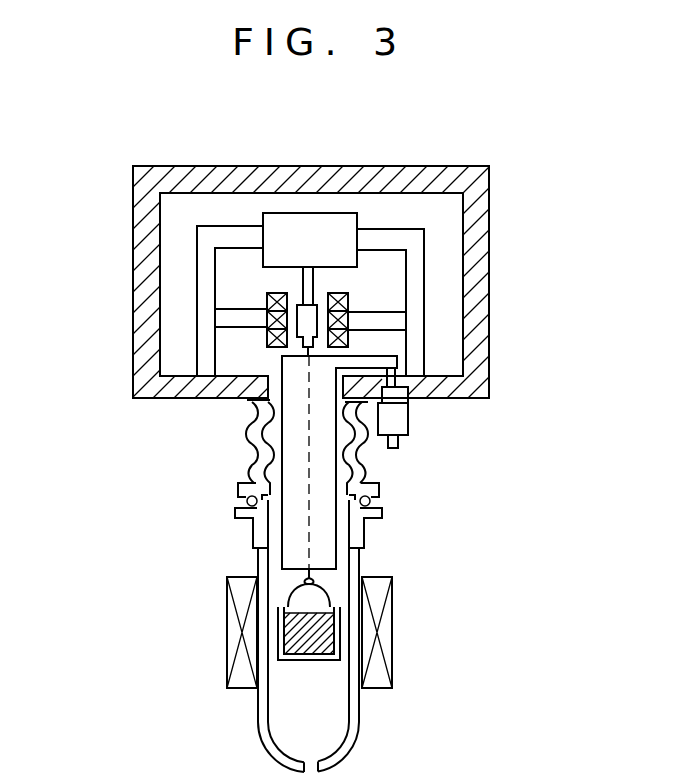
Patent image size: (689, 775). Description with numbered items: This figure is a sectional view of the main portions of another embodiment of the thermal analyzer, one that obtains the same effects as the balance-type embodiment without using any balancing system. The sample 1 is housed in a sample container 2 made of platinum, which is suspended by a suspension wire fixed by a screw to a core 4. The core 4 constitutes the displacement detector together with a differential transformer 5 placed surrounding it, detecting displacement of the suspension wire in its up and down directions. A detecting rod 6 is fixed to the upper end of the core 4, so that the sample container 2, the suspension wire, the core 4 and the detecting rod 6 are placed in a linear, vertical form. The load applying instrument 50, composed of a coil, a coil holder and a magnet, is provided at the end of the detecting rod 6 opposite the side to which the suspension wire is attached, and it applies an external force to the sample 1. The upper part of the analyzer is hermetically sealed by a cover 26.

The cover 26 is at (427, 168).
The load applying instrument 50 is at (357, 218).
The detecting rod 6 is at (305, 283).
The differential transformer 5 is at (349, 300).
The core 4 is at (302, 328).
The sample 1 is at (318, 620).
The sample container 2 is at (307, 662).